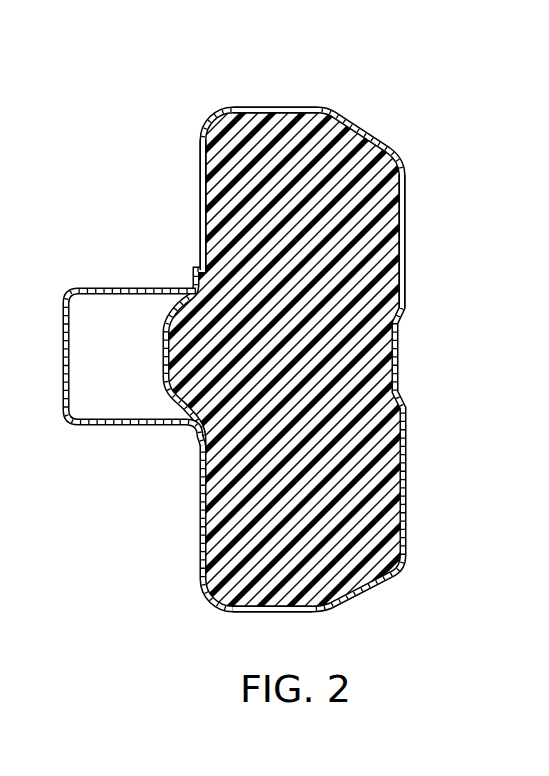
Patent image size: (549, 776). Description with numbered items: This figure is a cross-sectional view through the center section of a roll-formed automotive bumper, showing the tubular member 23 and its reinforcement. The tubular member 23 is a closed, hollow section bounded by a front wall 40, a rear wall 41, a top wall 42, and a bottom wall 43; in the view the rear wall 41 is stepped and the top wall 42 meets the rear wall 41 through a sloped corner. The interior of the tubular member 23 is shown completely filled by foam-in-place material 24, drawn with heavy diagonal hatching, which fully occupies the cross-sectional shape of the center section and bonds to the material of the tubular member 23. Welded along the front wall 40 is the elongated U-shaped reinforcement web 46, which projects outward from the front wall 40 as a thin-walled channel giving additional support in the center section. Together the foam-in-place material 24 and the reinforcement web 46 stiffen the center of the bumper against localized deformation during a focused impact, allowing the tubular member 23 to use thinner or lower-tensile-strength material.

The tubular member 23 is at (333, 102).
The foam-in-place material 24 is at (343, 328).
The front wall 40 is at (197, 205).
The rear wall 41 is at (405, 268).
The top wall 42 is at (252, 107).
The bottom wall 43 is at (313, 610).
The reinforcement web 46 is at (92, 288).